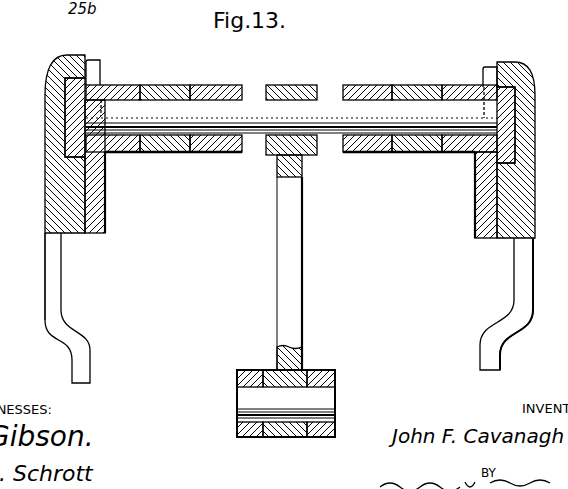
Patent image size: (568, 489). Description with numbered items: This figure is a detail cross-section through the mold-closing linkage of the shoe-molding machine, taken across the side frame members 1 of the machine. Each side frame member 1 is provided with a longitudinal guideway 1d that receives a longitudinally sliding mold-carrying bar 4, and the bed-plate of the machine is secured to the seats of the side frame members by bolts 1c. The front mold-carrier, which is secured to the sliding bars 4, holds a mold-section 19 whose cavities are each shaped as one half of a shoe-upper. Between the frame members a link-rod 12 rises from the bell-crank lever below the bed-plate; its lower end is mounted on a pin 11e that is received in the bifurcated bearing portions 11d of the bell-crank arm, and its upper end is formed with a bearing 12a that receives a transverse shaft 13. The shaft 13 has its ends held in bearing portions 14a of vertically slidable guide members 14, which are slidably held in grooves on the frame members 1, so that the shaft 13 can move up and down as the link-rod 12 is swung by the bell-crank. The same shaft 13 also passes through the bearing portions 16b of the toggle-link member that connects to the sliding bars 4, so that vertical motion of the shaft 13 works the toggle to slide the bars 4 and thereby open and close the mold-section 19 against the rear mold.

The side frame member 1 is at (52, 272).
The longitudinal guideway 1d is at (48, 80).
The bolt 1c is at (535, 93).
The mold-carrying bar 4 is at (75, 127).
The mold-section 19 is at (97, 63).
The guide member 14 is at (97, 212).
The bearing portion of guide member 14a is at (116, 97).
The bearing portion of toggle-link member 16b is at (410, 80).
The bearing of link-rod 12a is at (300, 97).
The shaft 13 is at (258, 142).
The link-rod 12 is at (290, 250).
The pin 11e is at (325, 405).
The bearing portion of bell-crank arm 11d is at (317, 437).